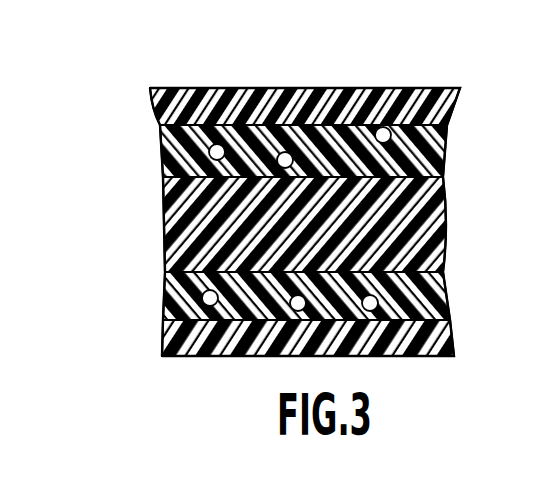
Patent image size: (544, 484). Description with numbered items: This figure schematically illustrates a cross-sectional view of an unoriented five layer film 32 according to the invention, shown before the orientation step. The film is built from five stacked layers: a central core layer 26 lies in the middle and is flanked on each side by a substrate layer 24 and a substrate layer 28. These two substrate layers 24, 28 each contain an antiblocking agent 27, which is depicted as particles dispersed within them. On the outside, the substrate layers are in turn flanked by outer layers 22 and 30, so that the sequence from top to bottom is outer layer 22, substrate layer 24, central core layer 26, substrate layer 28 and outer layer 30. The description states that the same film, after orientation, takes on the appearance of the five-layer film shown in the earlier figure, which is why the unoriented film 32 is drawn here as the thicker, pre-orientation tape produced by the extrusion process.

The outer layer 22 is at (456, 103).
The substrate layer 24 is at (447, 147).
The central core layer 26 is at (435, 228).
The substrate layer 28 is at (445, 292).
The outer layer 30 is at (450, 339).
The antiblocking agent 27 is at (148, 150).
The unoriented five layer film 32 is at (271, 184).